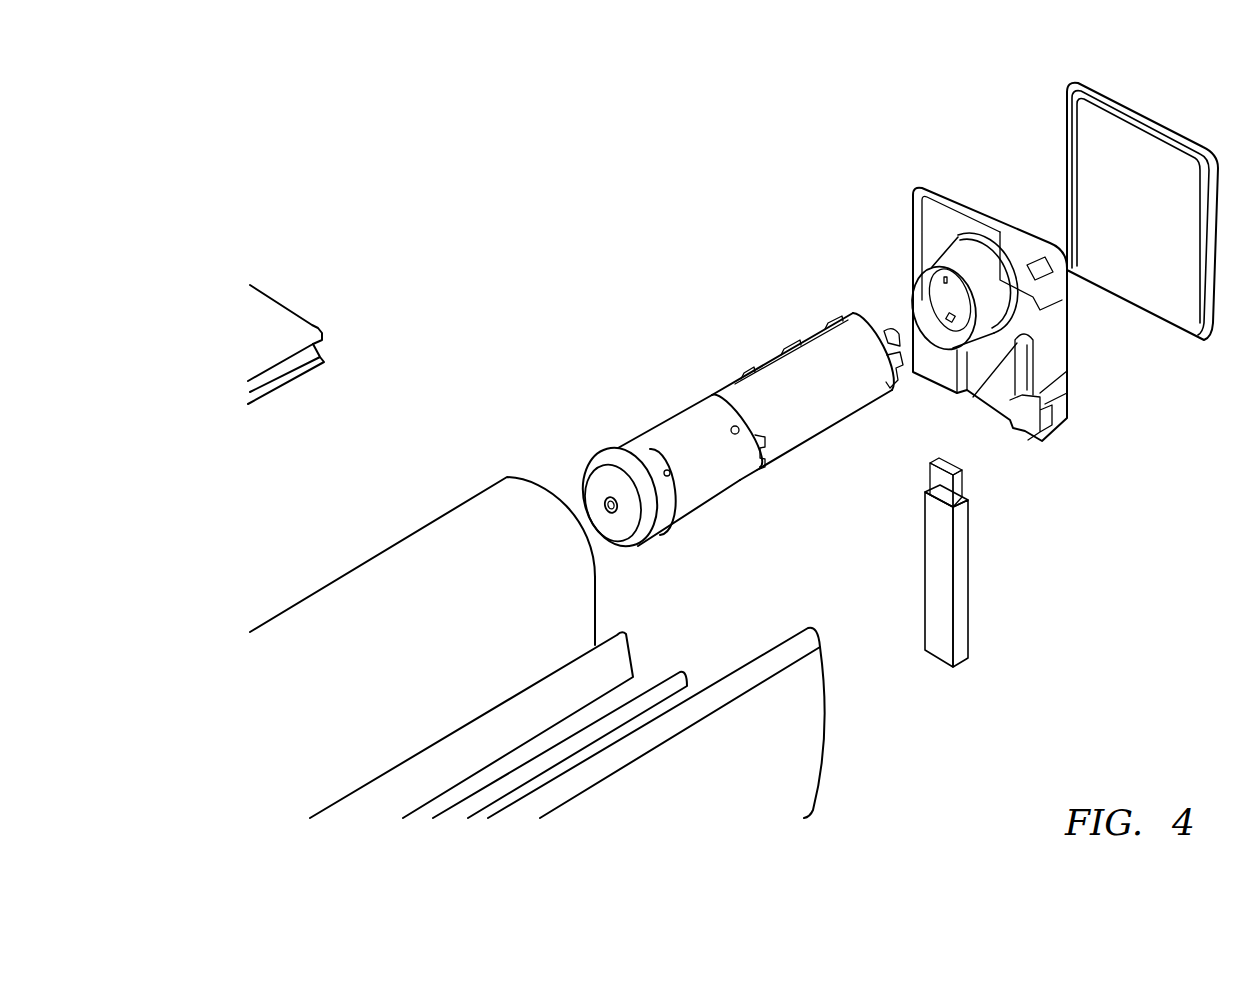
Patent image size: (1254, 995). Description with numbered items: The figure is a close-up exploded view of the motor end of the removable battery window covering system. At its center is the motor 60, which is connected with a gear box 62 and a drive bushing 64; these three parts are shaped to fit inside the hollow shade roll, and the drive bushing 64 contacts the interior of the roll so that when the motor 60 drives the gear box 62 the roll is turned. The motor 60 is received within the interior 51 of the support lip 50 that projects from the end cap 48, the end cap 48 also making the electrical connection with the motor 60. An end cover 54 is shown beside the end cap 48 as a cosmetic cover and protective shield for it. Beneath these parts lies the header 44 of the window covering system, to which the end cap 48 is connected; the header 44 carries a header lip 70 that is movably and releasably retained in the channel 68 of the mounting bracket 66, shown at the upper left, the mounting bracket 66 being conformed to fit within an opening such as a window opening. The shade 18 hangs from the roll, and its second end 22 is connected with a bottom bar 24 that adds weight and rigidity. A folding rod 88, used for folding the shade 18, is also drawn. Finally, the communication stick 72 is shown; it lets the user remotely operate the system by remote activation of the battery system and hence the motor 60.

The shade 18 is at (495, 610).
The second end 22 is at (578, 622).
The bottom bar 24 is at (618, 660).
The header 44 is at (784, 760).
The end cap 48 is at (945, 182).
The support lip 50 is at (948, 255).
The interior 51 is at (930, 288).
The end cover 54 is at (1118, 108).
The motor 60 is at (780, 387).
The gear box 62 is at (680, 432).
The drive bushing 64 is at (612, 455).
The mounting bracket 66 is at (277, 318).
The channel 68 is at (330, 344).
The header lip 70 is at (805, 642).
The communication stick 72 is at (958, 587).
The folding rod 88 is at (677, 677).